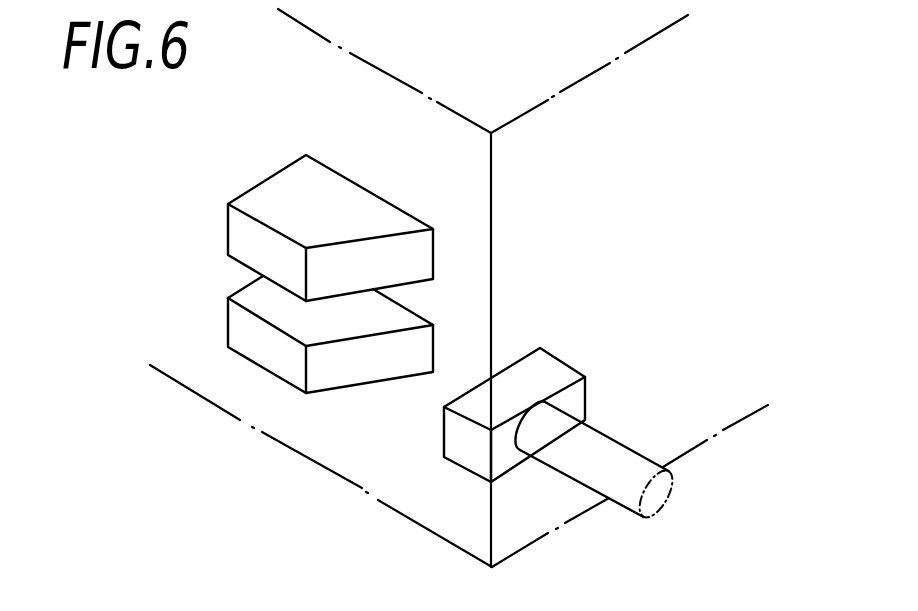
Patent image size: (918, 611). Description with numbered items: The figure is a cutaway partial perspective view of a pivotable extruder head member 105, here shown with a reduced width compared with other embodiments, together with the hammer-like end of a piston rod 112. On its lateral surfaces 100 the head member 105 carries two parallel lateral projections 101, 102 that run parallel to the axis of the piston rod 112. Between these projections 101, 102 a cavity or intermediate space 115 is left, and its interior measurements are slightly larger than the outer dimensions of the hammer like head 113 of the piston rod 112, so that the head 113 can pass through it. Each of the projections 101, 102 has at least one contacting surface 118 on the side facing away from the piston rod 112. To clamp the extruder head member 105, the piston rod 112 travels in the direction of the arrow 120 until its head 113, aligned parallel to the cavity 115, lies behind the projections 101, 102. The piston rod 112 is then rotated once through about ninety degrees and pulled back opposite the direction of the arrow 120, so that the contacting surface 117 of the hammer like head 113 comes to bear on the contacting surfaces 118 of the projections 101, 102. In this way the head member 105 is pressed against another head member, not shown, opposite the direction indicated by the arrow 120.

The lateral surface 100 is at (357, 98).
The lateral projection 101 is at (378, 212).
The lateral projection 102 is at (243, 335).
The pivotable extruder head member 105 is at (290, 482).
The piston rod 112 is at (627, 452).
The hammer like head 113 is at (553, 367).
The intermediate space 115 is at (430, 298).
The contacting surface 117 is at (505, 455).
The contacting surface 118 is at (252, 174).
The arrow 120 is at (352, 319).